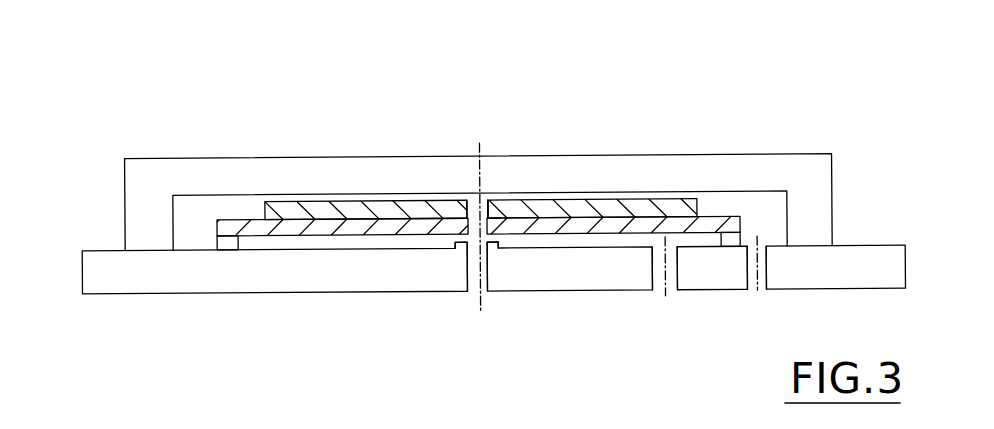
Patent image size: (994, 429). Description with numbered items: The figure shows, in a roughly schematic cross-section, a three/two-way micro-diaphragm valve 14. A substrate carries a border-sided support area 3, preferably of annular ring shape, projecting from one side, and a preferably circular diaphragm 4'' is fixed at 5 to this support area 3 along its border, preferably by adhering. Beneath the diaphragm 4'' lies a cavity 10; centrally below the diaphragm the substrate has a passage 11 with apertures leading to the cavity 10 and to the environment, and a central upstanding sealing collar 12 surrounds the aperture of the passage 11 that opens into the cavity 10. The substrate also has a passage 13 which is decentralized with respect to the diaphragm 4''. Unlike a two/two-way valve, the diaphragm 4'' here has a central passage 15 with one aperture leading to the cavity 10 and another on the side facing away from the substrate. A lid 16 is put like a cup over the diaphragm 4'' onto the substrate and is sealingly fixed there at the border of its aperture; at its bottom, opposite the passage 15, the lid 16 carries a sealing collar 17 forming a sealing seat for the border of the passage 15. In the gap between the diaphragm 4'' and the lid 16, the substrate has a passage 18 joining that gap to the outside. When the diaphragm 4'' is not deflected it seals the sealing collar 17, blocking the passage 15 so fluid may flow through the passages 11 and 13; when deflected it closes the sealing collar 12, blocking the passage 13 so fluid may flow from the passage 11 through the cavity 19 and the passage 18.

The 3/2-way micro-diaphragm valve 14 is at (585, 132).
The lid 16 is at (177, 177).
The cavity 19 is at (760, 210).
The cavity 10 is at (322, 250).
The fixing of the diaphragm 5 is at (218, 228).
The diaphragm 4'' is at (482, 125).
The support area 3 is at (227, 252).
The central passage 15 is at (476, 205).
The sealing collar 17 is at (495, 205).
The passage 11 is at (476, 283).
The sealing collar 12 is at (499, 250).
The passage 13 is at (660, 292).
The passage 18 is at (758, 290).